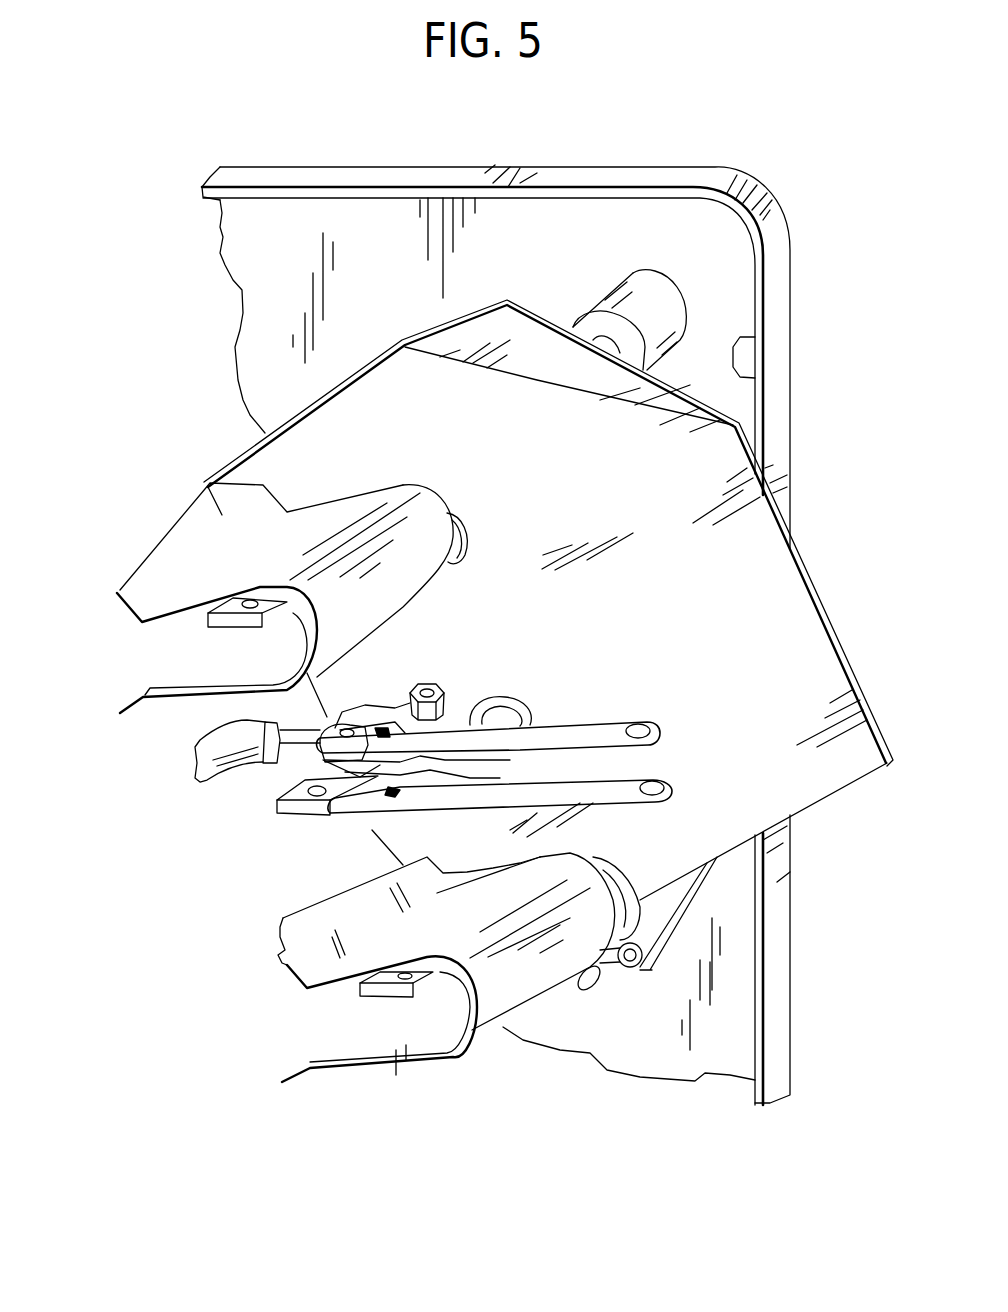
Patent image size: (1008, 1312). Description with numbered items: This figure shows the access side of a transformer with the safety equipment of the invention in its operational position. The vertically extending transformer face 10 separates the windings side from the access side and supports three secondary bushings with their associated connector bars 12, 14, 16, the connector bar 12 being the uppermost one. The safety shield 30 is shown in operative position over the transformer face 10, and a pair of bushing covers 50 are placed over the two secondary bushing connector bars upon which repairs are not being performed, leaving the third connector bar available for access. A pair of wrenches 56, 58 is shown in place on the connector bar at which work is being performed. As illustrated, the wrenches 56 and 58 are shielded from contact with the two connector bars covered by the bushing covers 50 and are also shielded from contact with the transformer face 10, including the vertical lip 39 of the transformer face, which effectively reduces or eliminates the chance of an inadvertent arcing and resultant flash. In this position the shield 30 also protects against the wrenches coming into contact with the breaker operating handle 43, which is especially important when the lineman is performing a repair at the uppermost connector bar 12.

The transformer face 10 is at (365, 253).
The connector bar 12 is at (208, 614).
The connector bar 14 is at (277, 806).
The connector bar 16 is at (425, 975).
The safety shield 30 is at (780, 628).
The vertical lip 39 is at (755, 378).
The breaker operating handle 43 is at (670, 312).
The bushing cover 50 is at (170, 568).
The wrench 56 is at (605, 722).
The wrench 58 is at (613, 790).